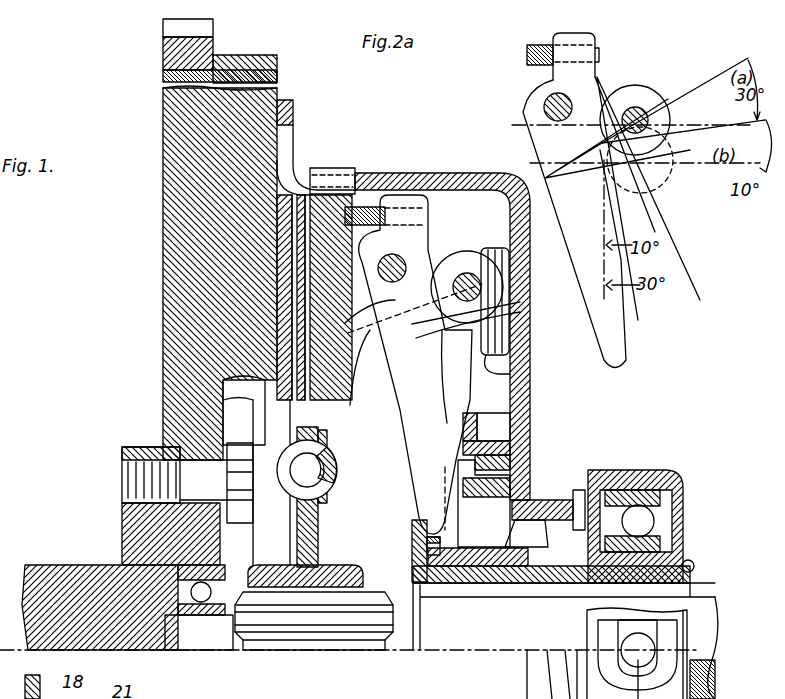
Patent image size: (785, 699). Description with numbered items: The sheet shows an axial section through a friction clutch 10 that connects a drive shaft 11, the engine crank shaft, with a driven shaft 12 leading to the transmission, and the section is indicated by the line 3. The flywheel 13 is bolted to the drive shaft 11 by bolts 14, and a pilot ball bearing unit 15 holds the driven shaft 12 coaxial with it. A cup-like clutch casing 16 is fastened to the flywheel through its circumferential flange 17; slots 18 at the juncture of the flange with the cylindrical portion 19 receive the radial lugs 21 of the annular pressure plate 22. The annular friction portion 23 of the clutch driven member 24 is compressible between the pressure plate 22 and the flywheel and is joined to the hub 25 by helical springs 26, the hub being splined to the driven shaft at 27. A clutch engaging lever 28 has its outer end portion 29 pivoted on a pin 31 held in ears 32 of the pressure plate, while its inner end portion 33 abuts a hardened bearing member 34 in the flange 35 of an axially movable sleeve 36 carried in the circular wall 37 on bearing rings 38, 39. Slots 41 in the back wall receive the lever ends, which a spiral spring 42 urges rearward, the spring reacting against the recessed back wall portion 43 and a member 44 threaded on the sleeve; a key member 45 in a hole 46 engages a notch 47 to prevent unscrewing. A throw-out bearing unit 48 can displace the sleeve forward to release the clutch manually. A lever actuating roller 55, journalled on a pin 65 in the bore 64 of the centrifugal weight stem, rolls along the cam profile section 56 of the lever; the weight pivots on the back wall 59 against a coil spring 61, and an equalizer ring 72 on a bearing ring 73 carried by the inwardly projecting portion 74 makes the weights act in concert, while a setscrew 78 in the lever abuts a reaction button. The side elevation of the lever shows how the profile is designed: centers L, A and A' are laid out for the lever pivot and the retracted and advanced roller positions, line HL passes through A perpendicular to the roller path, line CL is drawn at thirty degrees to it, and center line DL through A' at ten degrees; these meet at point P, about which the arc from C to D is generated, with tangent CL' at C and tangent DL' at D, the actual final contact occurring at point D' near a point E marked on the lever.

In FIG. 1, the section line 3 is at (328, 134).
In FIG. 1, the friction clutch 10 is at (400, 124).
In FIG. 1, the drive shaft 11 is at (72, 557).
In FIG. 1, the driven shaft 12 is at (706, 603).
In FIG. 1, the flywheel 13 is at (163, 300).
In FIG. 1, the bolts 14 is at (122, 478).
In FIG. 1, the pilot ball bearing unit 15 is at (203, 612).
In FIG. 1, the clutch casing 16 is at (470, 178).
In FIG. 1, the circumferential flange 17 is at (292, 115).
In FIG. 1, the slots 18 is at (292, 163).
In FIG. 1, the cylindrical portion 19 is at (392, 180).
In FIG. 1, the radial lugs 21 is at (340, 172).
In FIG. 1, the annular pressure plate 22 is at (346, 204).
In FIG. 1, the annular friction portion 23 is at (283, 229).
In FIG. 1, the clutch driven member 24 is at (343, 510).
In FIG. 1, the hub 25 is at (333, 574).
In FIG. 1, the helical springs 26 is at (338, 466).
In FIG. 1, the spline 27 is at (312, 623).
In FIG. 1, the clutch engaging lever 28 is at (420, 408).
In FIG. 2a, the clutch engaging lever 28 is at (628, 346).
In FIG. 1, the outer end portion 29 is at (430, 245).
In FIG. 1, the pin 31 is at (406, 266).
In FIG. 2a, the pin 31 is at (543, 104).
In FIG. 1, the ears 32 is at (368, 335).
In FIG. 1, the inner end portion 33 is at (430, 516).
In FIG. 1, the hardened bearing member 34 is at (413, 560).
In FIG. 1, the flange 35 is at (412, 545).
In FIG. 1, the sleeve 36 is at (492, 570).
In FIG. 1, the circular wall 37 is at (466, 570).
In FIG. 1, the bearing ring 38 is at (440, 570).
In FIG. 1, the bearing ring 39 is at (520, 568).
In FIG. 1, the slots 41 is at (428, 512).
In FIG. 1, the spiral spring 42 is at (530, 500).
In FIG. 1, the recessed back wall portion 43 is at (484, 503).
In FIG. 1, the threaded member 44 is at (586, 490).
In FIG. 1, the key member 45 is at (695, 562).
In FIG. 1, the hole 46 is at (696, 572).
In FIG. 1, the notch 47 is at (693, 556).
In FIG. 1, the clutch throw-out bearing unit 48 is at (650, 492).
In FIG. 1, the lever actuating roller 55 is at (504, 290).
In FIG. 2a, the lever actuating roller 55 is at (625, 90).
In FIG. 2a, the cam profile section 56 is at (652, 136).
In FIG. 1, the back wall 59 is at (526, 336).
In FIG. 1, the coil spring 61 is at (527, 377).
In FIG. 1, the bore 64 is at (467, 278).
In FIG. 2a, the bore 64 is at (635, 120).
In FIG. 1, the pin 65 is at (455, 289).
In FIG. 1, the equalizer ring 72 is at (476, 426).
In FIG. 1, the bearing ring 73 is at (510, 446).
In FIG. 1, the circular inwardly projecting portion 74 is at (512, 462).
In FIG. 1, the setscrew 78 is at (428, 214).
In FIG. 1, the center position A is at (514, 267).
In FIG. 2a, the center position A is at (654, 88).
In FIG. 1, the center position A' is at (544, 316).
In FIG. 2a, the center position A' is at (659, 206).
In FIG. 1, the point C is at (398, 318).
In FIG. 2a, the point C is at (602, 141).
In FIG. 1, the point D is at (412, 372).
In FIG. 2a, the point D is at (590, 199).
In FIG. 1, the point D' is at (407, 352).
In FIG. 2a, the point D' is at (586, 175).
In FIG. 1, the point E is at (415, 335).
In FIG. 2a, the center L is at (546, 98).
In FIG. 2a, the intersection point P is at (545, 178).
In FIG. 2a, the line HL is at (631, 113).
In FIG. 2a, the line CL is at (675, 86).
In FIG. 2a, the center line DL is at (683, 132).
In FIG. 2a, the tangent line CL' is at (697, 284).
In FIG. 2a, the tangent line DL' is at (680, 250).